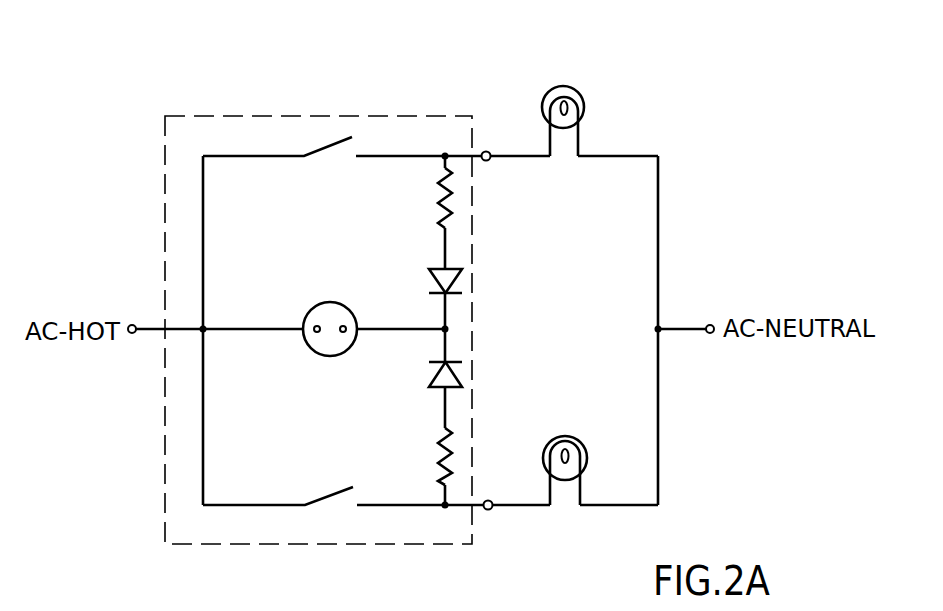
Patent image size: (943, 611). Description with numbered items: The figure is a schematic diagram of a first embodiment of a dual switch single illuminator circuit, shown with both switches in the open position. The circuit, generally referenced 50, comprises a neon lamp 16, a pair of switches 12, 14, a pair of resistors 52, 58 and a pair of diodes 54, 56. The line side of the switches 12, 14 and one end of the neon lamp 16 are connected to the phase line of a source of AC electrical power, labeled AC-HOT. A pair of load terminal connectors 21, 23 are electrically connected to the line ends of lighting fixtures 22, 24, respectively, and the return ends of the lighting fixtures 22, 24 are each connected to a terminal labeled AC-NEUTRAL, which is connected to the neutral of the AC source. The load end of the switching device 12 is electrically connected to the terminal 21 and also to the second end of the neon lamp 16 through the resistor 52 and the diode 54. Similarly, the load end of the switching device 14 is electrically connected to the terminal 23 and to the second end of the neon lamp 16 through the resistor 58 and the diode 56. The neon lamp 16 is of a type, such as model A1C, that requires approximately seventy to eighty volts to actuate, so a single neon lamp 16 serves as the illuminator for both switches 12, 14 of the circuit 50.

The switch 12 is at (327, 138).
The switch 14 is at (323, 502).
The neon lamp 16 is at (330, 301).
The load terminal connector 21 is at (486, 150).
The lighting fixture 22 is at (586, 107).
The load terminal connector 23 is at (490, 510).
The lighting fixture 24 is at (587, 448).
The circuit 50 is at (255, 112).
The resistor 52 is at (447, 192).
The diode 54 is at (462, 278).
The diode 56 is at (462, 378).
The resistor 58 is at (448, 455).